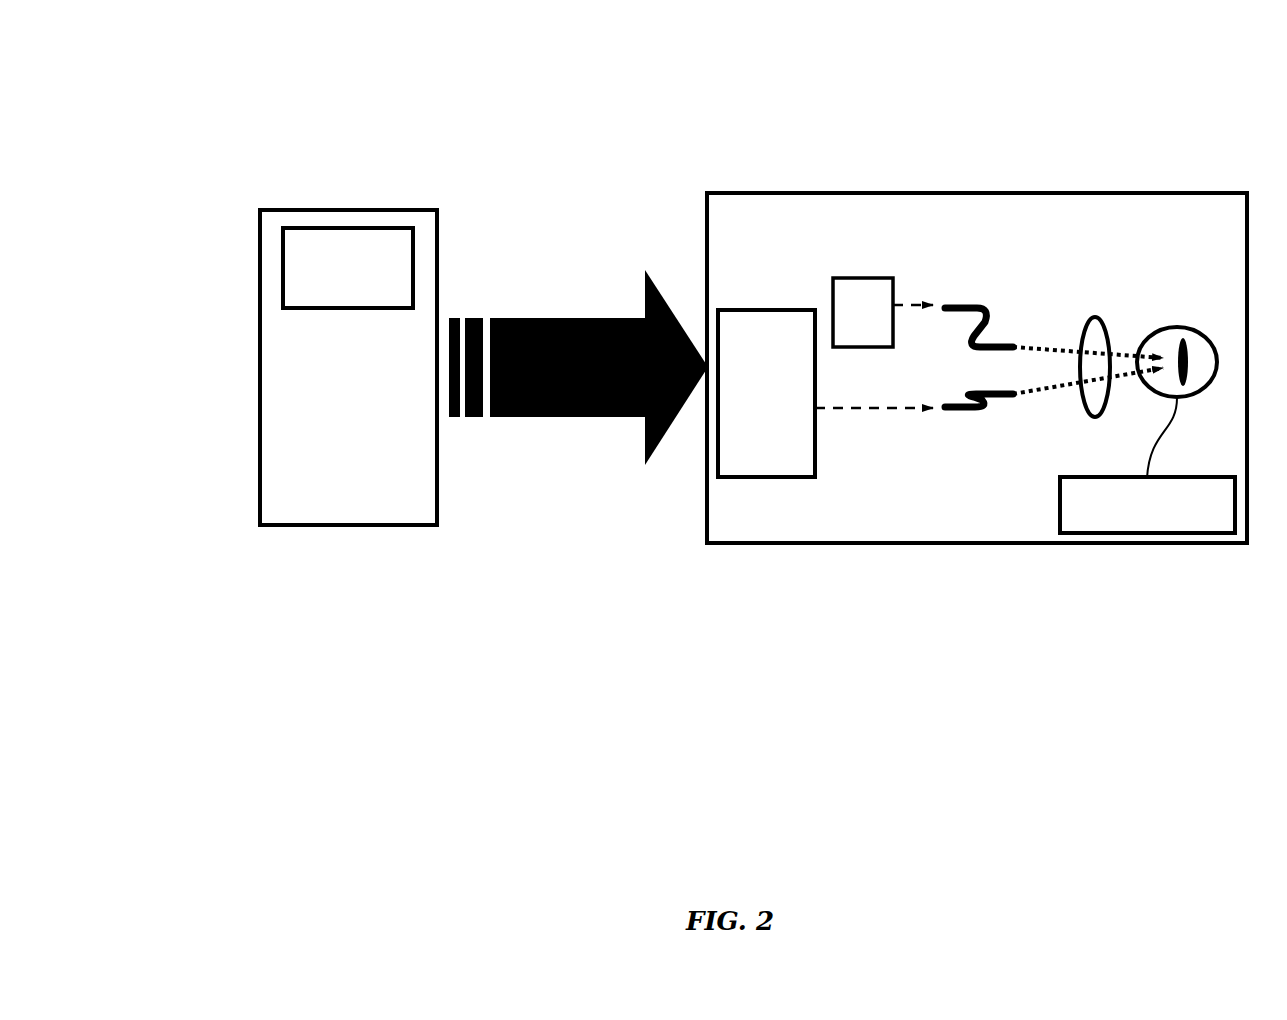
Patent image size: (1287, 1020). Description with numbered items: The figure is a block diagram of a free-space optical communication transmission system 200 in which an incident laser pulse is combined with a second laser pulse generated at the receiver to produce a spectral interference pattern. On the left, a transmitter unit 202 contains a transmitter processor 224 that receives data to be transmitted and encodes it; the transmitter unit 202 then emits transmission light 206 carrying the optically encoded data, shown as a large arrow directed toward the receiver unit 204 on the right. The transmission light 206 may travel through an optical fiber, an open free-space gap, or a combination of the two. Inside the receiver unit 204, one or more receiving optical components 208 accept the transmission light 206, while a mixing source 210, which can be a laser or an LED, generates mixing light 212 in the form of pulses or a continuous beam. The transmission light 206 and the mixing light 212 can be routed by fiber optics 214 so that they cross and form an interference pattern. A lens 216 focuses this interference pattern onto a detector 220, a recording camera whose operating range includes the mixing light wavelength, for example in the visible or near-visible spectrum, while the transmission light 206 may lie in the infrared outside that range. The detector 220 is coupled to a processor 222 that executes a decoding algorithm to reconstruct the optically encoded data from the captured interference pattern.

The transmission system 200 is at (241, 164).
The transmitter unit 202 is at (395, 505).
The receiver unit 204 is at (1180, 216).
The transmission light 206 is at (578, 317).
The receiving optical components 208 is at (770, 334).
The mixing source 210 is at (855, 296).
The mixing light 212 is at (918, 304).
The fiber optics 214 is at (1014, 386).
The lens 216 is at (1098, 336).
The detector 220 is at (1196, 331).
The processor 222 is at (1159, 516).
The transmitter processor 224 is at (383, 249).